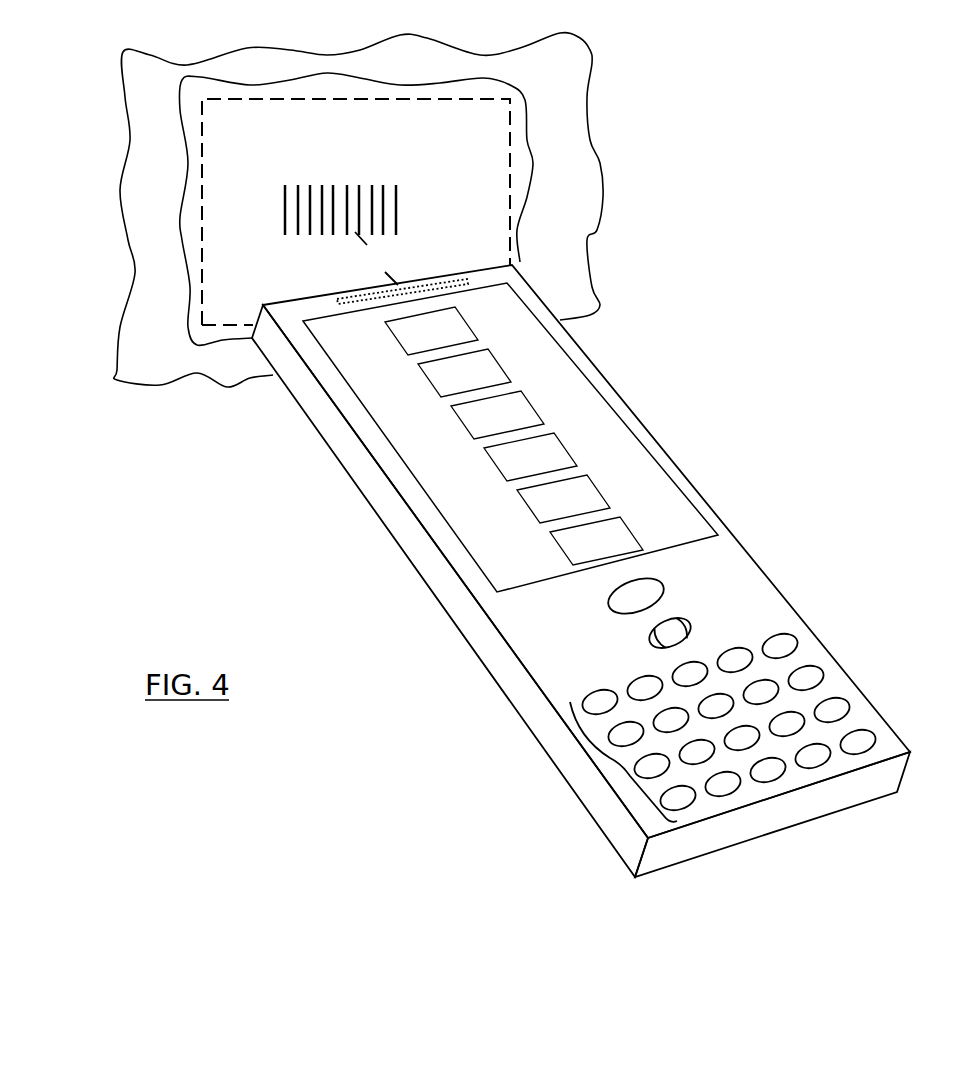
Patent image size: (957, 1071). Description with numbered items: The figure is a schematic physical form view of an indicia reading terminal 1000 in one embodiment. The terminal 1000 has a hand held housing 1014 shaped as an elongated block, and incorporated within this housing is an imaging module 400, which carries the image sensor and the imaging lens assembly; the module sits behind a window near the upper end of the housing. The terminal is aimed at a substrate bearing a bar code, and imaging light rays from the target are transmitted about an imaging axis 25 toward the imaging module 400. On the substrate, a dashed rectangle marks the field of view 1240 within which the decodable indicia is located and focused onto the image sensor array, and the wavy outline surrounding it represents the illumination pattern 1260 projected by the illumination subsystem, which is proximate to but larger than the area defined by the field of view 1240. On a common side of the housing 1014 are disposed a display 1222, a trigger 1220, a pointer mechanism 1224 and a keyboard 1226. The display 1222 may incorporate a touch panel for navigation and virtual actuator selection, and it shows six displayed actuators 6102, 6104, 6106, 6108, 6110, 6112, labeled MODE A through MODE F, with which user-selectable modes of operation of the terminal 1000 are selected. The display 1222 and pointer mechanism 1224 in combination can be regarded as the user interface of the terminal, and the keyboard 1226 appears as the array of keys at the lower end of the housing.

The terminal 1000 is at (715, 262).
The hand held housing 1014 is at (818, 656).
The illumination pattern 1260 is at (526, 140).
The field of view 1240 is at (512, 183).
The imaging axis 25 is at (380, 263).
The imaging module 400 is at (487, 277).
The display 1222 is at (708, 525).
The displayed actuator 6102 is at (466, 323).
The displayed actuator 6104 is at (499, 365).
The displayed actuator 6106 is at (532, 407).
The displayed actuator 6108 is at (565, 449).
The displayed actuator 6110 is at (598, 491).
The displayed actuator 6112 is at (631, 533).
The trigger 1220 is at (662, 588).
The pointer mechanism 1224 is at (688, 627).
The keyboard 1226 is at (608, 768).